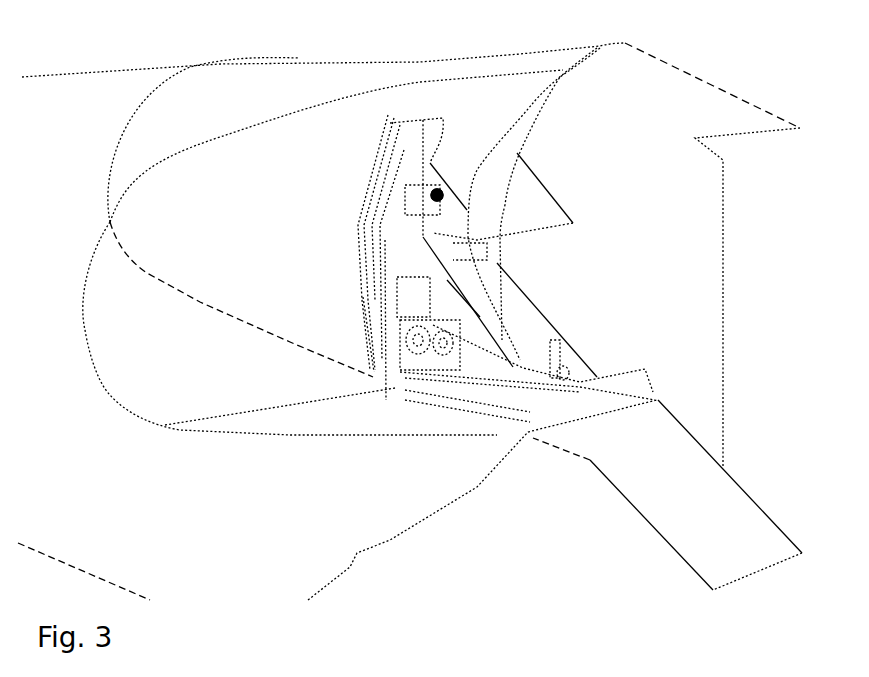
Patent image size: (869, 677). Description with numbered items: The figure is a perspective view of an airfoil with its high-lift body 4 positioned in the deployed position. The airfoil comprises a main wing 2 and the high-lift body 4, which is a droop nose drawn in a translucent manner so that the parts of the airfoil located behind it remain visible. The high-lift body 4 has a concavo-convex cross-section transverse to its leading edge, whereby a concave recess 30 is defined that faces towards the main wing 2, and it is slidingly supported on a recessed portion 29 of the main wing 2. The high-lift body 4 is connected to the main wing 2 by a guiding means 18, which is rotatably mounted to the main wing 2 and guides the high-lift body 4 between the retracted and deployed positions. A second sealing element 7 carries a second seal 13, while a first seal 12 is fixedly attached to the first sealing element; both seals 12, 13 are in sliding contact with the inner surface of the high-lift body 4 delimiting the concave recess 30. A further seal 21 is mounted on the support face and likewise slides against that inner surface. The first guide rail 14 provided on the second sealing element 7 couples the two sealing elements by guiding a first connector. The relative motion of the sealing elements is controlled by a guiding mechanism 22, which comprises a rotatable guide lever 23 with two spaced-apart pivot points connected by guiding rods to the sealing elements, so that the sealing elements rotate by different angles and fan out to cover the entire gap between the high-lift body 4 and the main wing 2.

The main wing 2 is at (56, 192).
The high-lift body 4 is at (108, 394).
The second sealing element 7 is at (393, 263).
The first seal 12 is at (374, 372).
The second seal 13 is at (357, 287).
The first guide rail 14 is at (378, 245).
The guiding means 18 is at (524, 365).
The seal 21 is at (381, 137).
The guiding mechanism 22 is at (420, 190).
The guide lever 23 is at (333, 100).
The recessed portion 29 is at (569, 77).
The concave recess 30 is at (190, 387).